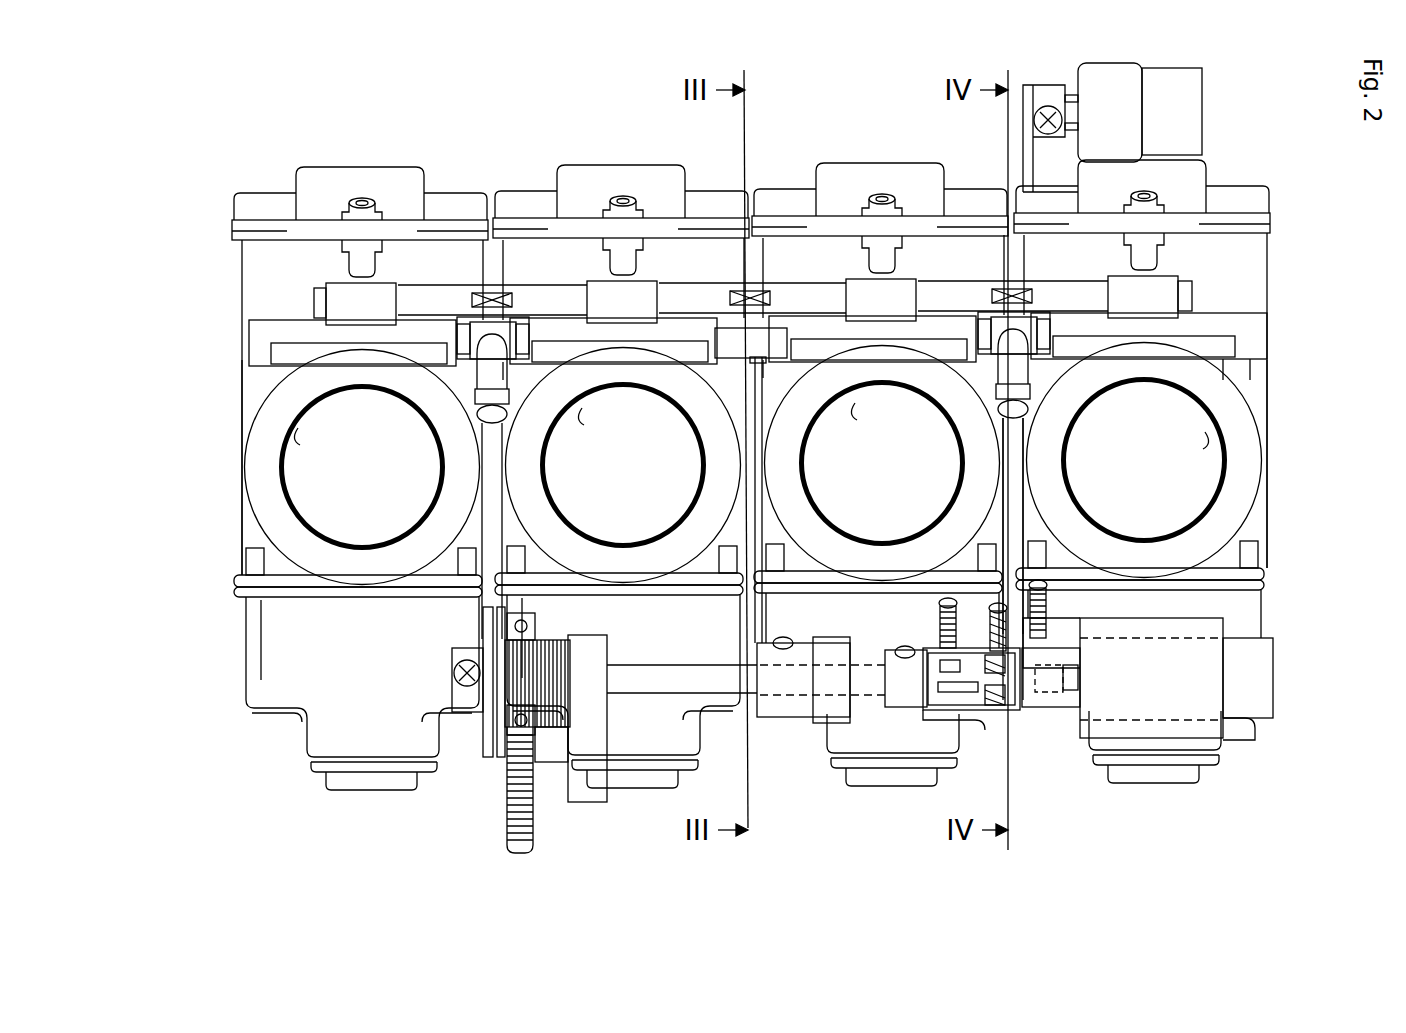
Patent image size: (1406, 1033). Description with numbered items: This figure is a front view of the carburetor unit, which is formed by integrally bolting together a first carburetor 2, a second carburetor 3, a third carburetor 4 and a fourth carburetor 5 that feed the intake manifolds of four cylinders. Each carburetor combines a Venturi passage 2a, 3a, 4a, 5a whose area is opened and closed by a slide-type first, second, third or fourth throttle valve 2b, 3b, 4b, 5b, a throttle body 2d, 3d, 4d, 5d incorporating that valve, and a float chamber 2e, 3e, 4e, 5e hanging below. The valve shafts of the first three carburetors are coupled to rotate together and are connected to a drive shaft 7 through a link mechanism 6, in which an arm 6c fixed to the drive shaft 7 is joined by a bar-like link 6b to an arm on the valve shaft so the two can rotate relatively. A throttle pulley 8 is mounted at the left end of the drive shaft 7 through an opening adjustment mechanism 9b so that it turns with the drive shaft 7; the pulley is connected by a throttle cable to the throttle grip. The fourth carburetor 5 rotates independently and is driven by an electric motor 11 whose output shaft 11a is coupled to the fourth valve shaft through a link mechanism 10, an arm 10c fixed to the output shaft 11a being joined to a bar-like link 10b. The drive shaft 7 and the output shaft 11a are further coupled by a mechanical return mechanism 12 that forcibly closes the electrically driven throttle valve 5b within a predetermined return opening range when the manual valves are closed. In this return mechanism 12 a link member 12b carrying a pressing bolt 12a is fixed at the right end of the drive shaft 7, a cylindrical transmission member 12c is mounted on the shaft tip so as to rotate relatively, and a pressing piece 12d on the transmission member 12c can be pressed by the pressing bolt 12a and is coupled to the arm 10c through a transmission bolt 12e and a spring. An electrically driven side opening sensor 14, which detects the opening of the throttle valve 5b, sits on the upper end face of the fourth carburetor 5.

The first carburetor 2 is at (370, 172).
The Venturi passage 2a is at (298, 428).
The first throttle valve 2b is at (330, 412).
The throttle body 2d is at (243, 470).
The float chamber 2e is at (310, 757).
The second carburetor 3 is at (618, 170).
The Venturi passage 3a is at (582, 408).
The second throttle valve 3b is at (655, 420).
The throttle body 3d is at (597, 398).
The float chamber 3e is at (635, 775).
The third carburetor 4 is at (876, 168).
The Venturi passage 4a is at (855, 403).
The third throttle valve 4b is at (920, 420).
The throttle body 4d is at (880, 396).
The float chamber 4e is at (850, 780).
The fourth carburetor 5 is at (1205, 172).
The Venturi passage 5a is at (1205, 432).
The fourth throttle valve 5b is at (1165, 400).
The throttle body 5d is at (1269, 462).
The float chamber 5e is at (1155, 785).
The link mechanism 6 is at (762, 512).
The link 6b is at (762, 447).
The arm 6c is at (770, 720).
The drive shaft 7 is at (670, 685).
The throttle pulley 8 is at (487, 740).
The opening adjustment mechanism 9b is at (555, 730).
The link mechanism 10 is at (1022, 512).
The link 10b is at (1025, 445).
The arm 10c is at (1025, 706).
The electric motor 11 is at (1262, 700).
The output shaft 11a is at (1085, 655).
The return mechanism 12 is at (1000, 722).
The pressing bolt 12a is at (938, 605).
The link member 12b is at (948, 700).
The transmission member 12c is at (960, 712).
The pressing piece 12d is at (1012, 716).
The transmission bolt 12e is at (1034, 583).
The electrically driven side opening sensor 14 is at (1187, 102).